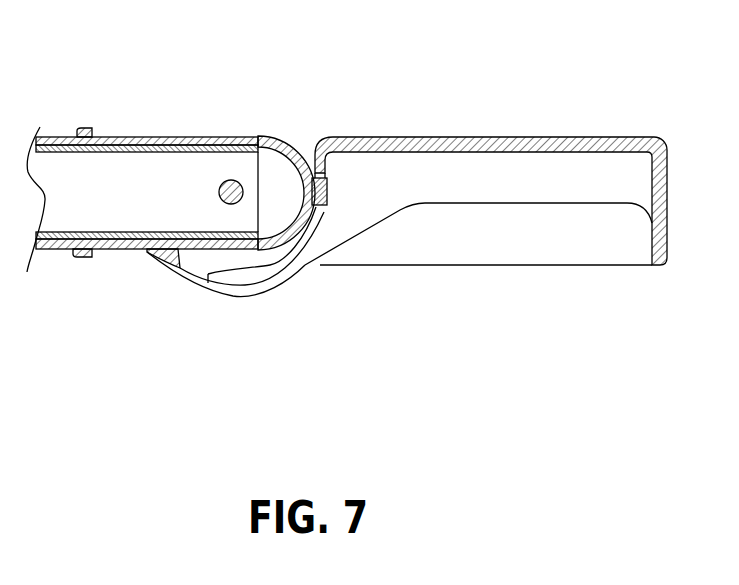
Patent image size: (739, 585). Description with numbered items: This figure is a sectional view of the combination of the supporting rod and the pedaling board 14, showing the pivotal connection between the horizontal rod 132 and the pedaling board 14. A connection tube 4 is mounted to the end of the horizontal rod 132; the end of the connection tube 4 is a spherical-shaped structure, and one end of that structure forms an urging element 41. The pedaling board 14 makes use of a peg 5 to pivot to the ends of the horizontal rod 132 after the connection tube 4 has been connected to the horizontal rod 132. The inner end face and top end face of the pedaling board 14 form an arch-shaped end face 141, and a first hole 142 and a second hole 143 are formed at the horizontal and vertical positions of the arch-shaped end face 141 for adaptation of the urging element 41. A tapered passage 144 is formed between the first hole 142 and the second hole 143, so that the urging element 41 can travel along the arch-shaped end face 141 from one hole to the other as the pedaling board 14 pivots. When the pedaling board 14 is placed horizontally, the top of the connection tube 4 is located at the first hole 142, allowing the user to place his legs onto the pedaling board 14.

The connection tube 4 is at (190, 138).
The peg 5 is at (231, 188).
The pedaling board 14 is at (526, 150).
The urging element 41 is at (325, 207).
The horizontal rod 132 is at (53, 240).
The arch-shaped end face 141 is at (300, 254).
The first hole 142 is at (328, 178).
The second hole 143 is at (193, 282).
The tapered passage 144 is at (282, 265).